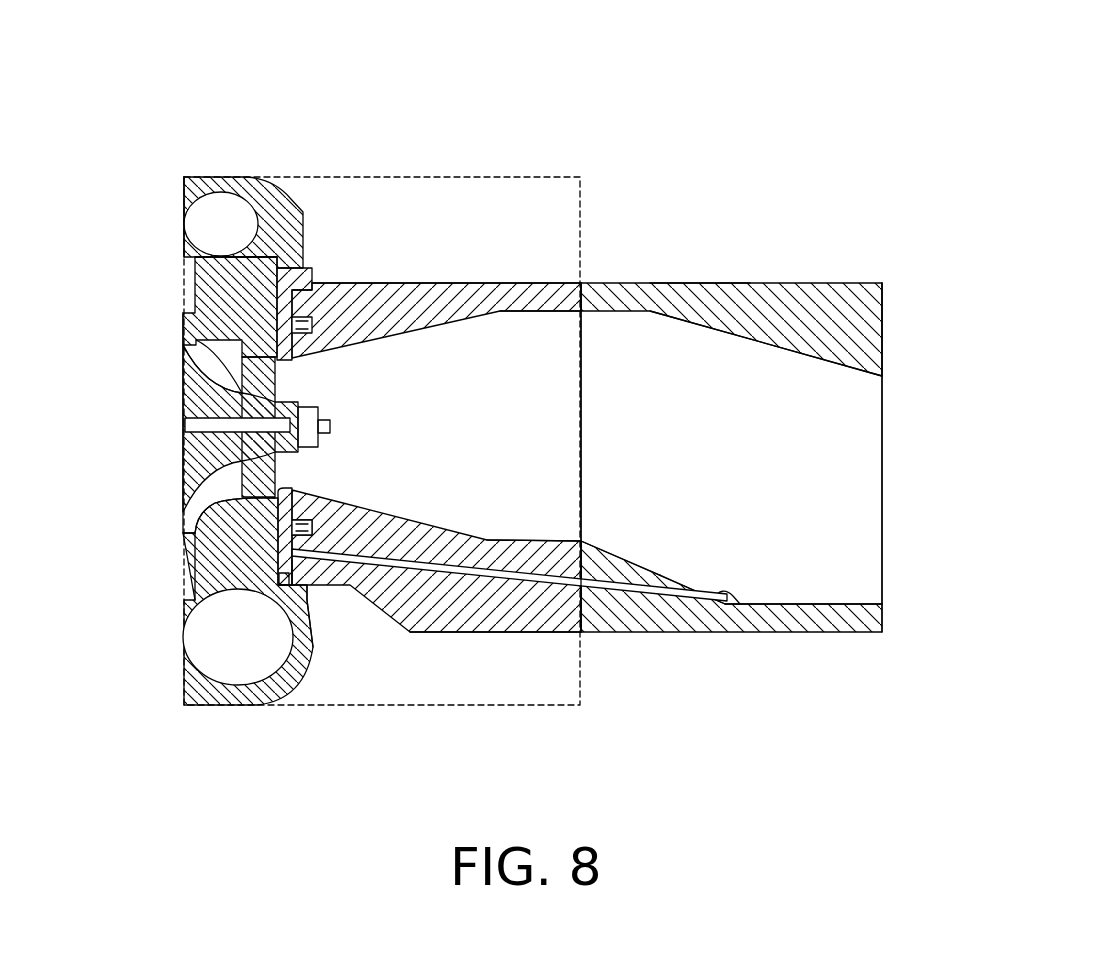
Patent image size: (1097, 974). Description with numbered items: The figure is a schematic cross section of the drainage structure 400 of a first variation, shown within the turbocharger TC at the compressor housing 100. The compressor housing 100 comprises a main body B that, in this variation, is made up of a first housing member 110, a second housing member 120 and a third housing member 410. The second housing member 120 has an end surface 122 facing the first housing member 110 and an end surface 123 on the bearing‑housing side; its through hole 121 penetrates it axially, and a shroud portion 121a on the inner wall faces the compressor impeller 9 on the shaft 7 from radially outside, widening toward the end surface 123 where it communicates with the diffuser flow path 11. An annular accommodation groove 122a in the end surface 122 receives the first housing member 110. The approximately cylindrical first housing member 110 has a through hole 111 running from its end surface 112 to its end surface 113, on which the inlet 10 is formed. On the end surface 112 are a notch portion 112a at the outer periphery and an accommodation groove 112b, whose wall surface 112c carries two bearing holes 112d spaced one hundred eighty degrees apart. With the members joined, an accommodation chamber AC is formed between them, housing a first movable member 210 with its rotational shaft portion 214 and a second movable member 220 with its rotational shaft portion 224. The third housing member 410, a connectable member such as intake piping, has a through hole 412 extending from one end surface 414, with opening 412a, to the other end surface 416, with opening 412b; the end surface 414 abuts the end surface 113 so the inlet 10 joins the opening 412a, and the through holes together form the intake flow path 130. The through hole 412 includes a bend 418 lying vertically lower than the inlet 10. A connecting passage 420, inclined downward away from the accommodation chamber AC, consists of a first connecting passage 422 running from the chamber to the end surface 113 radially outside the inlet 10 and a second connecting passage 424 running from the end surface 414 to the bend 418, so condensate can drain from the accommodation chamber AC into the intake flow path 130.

The turbocharger TC is at (95, 148).
The drainage structure 400 is at (600, 52).
The compressor housing 100 is at (548, 283).
The first housing member 110 is at (510, 283).
The through hole 111 is at (592, 283).
The main body B is at (700, 283).
The intake flow path 130 is at (445, 469).
The third housing member 410 is at (750, 283).
The through hole 412 is at (772, 348).
The opening 412a is at (540, 612).
The opening 412b is at (882, 576).
The other end surface 416 is at (882, 620).
The bend 418 is at (730, 604).
The second connecting passage 424 is at (700, 598).
The connecting passage 420 is at (652, 590).
The first connecting passage 422 is at (487, 570).
The one end surface 414 is at (568, 625).
The end surface 113 is at (537, 540).
The inlet 10 is at (582, 545).
The second housing member 120 is at (270, 185).
The end surface 122 is at (303, 223).
The accommodation groove 122a is at (332, 600).
The end surface 123 is at (184, 188).
The diffuser flow path 11 is at (190, 285).
The accommodation chamber AC is at (193, 263).
The compressor impeller 9 is at (183, 340).
The shroud portion 121a is at (183, 362).
The through hole 121 is at (182, 385).
The shaft 7 is at (182, 422).
The first movable member 210 is at (296, 360).
The rotational shaft portion 214 is at (314, 325).
The second movable member 220 is at (312, 548).
The rotational shaft portion 224 is at (345, 595).
The end surface 112 is at (250, 567).
The notch portion 112a is at (280, 578).
The accommodation groove 112b is at (292, 528).
The wall surface 112c is at (200, 497).
The bearing holes 112d is at (193, 527).